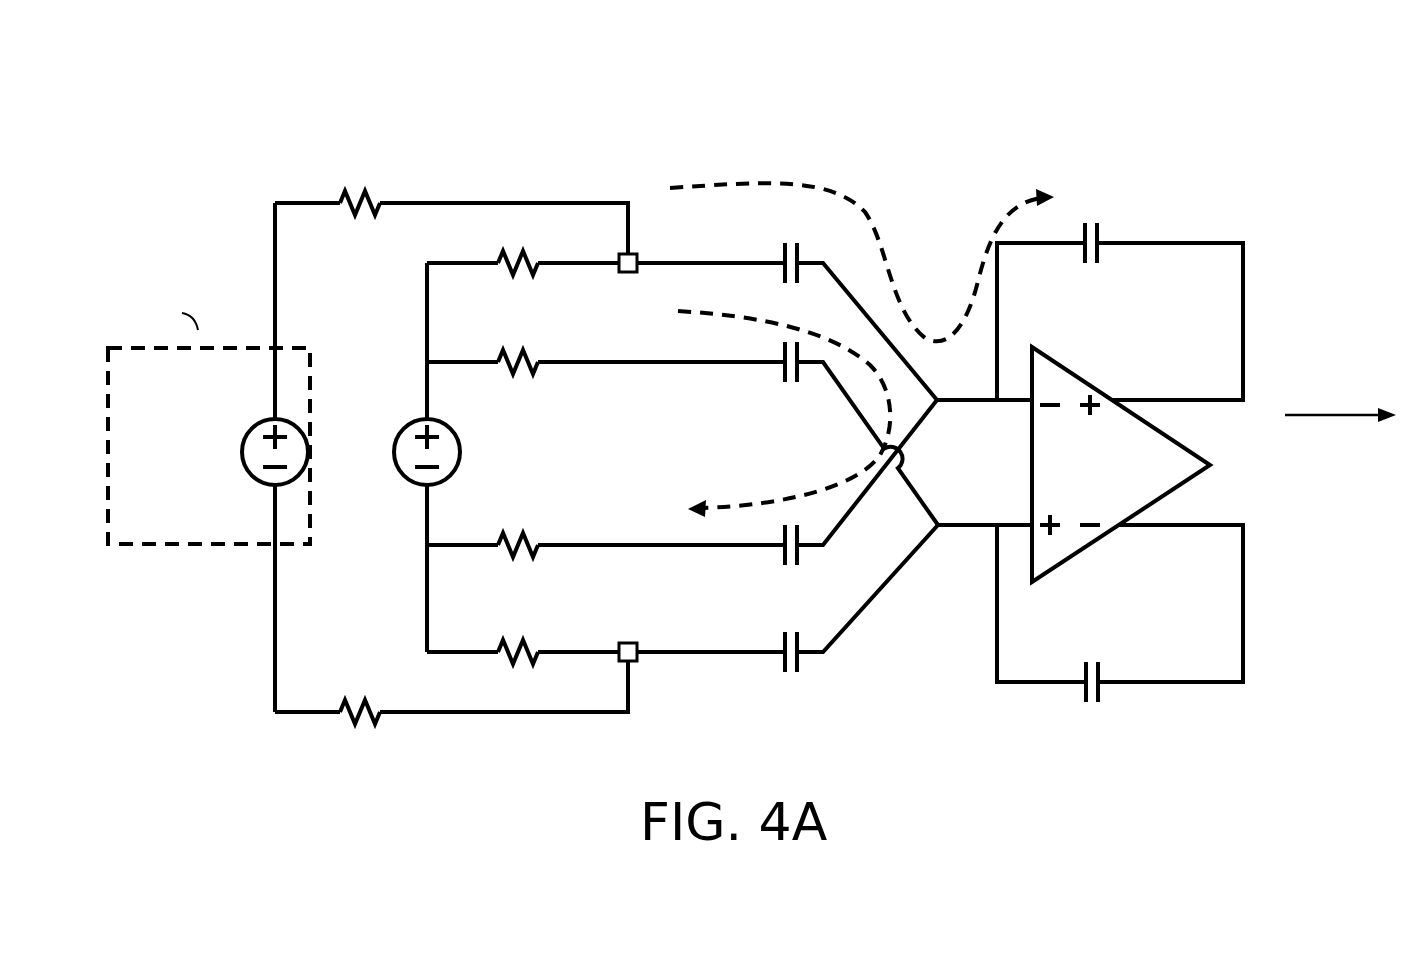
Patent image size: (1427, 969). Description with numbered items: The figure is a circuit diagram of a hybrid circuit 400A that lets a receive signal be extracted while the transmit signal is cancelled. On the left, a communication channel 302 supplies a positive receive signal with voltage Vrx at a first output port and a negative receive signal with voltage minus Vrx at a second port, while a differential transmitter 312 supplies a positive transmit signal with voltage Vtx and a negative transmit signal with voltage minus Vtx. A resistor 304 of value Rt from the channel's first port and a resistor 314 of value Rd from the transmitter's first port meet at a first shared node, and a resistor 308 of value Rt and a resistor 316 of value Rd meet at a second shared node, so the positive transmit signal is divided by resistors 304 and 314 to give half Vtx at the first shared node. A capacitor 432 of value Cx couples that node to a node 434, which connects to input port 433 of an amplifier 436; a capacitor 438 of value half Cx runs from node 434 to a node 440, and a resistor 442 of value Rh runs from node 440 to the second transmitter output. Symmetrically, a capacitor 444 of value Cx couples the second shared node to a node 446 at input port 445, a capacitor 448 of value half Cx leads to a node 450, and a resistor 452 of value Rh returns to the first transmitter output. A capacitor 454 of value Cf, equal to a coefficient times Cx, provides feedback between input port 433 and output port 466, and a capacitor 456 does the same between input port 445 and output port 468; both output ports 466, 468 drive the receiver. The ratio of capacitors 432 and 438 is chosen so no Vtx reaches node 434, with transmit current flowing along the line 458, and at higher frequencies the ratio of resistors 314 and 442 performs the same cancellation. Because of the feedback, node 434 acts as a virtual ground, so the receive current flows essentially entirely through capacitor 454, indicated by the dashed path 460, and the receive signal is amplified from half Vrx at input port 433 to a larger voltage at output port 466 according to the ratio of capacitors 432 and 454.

The hybrid circuit 400A is at (140, 121).
The communication channel 302 is at (243, 450).
The resistor 304 is at (353, 179).
The resistor 308 is at (353, 688).
The differential transmitter 312 is at (395, 450).
The resistor 314 is at (513, 246).
The resistor 316 is at (510, 636).
The capacitor 432 is at (790, 236).
The input port 433 is at (1027, 405).
The node 434 is at (938, 405).
The amplifier 436 is at (1065, 366).
The capacitor 438 is at (803, 552).
The node 440 is at (667, 543).
The resistor 442 is at (528, 525).
The capacitor 444 is at (805, 662).
The input port 445 is at (1028, 521).
The node 446 is at (958, 510).
The capacitor 448 is at (782, 355).
The node 450 is at (652, 359).
The resistor 452 is at (523, 345).
The capacitor 454 is at (1090, 226).
The capacitor 456 is at (1090, 662).
The line 458 is at (760, 498).
The receive signal path 460 is at (795, 185).
The output port 466 is at (1120, 400).
The output port 468 is at (1128, 533).